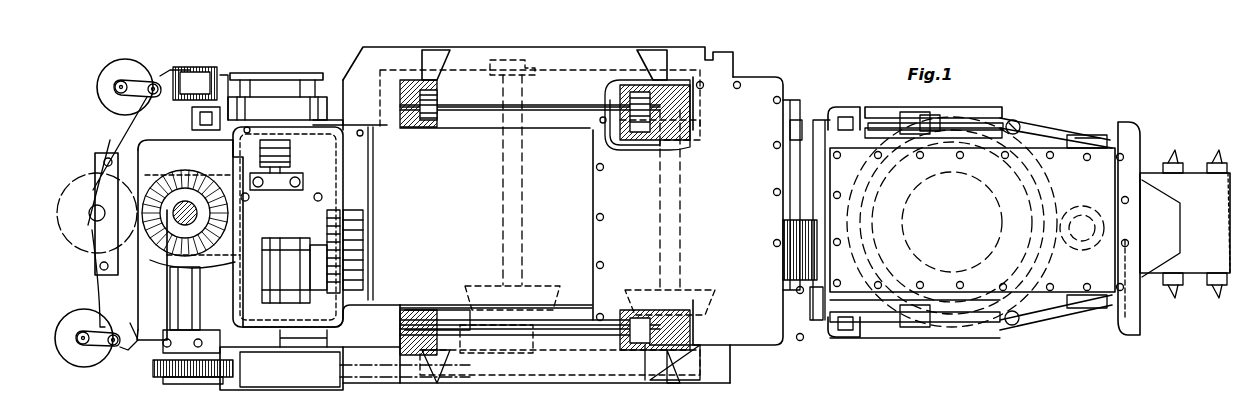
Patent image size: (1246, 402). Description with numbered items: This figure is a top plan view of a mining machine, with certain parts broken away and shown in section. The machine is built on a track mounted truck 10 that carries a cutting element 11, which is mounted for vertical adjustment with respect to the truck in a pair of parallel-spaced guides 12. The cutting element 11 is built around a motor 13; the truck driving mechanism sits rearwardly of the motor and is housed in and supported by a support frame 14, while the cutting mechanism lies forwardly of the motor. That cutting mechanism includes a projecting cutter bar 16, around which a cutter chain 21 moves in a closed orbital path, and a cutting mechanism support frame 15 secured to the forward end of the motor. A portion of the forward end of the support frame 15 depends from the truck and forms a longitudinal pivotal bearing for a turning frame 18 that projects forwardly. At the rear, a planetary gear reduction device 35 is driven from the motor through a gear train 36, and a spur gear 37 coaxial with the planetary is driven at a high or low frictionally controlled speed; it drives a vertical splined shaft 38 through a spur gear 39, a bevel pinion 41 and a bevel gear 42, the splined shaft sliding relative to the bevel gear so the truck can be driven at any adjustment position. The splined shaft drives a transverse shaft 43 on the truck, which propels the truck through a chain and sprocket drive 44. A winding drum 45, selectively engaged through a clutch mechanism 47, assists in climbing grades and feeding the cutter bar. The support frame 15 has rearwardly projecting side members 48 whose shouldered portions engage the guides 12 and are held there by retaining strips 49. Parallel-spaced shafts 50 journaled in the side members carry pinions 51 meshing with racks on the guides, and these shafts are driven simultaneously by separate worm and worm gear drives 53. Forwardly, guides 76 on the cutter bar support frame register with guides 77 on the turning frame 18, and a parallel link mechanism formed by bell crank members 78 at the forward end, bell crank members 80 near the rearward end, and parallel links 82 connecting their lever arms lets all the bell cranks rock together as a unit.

The track mounted truck 10 is at (740, 78).
The cutting element 11 is at (384, 118).
The guides 12 is at (418, 60).
The motor 13 is at (385, 312).
The support frame 14 is at (343, 120).
The cutting mechanism support frame 15 is at (752, 345).
The cutter bar 16 is at (1192, 285).
The turning frame 18 is at (1115, 130).
The cutter chain 21 is at (1190, 163).
The planetary gear reduction device 35 is at (298, 300).
The gear train 36 is at (365, 242).
The spur gear 37 is at (322, 290).
The vertical splined shaft 38 is at (170, 265).
The spur gear 39 is at (343, 190).
The bevel pinion 41 is at (200, 180).
The bevel gear 42 is at (108, 146).
The transverse shaft 43 is at (170, 330).
The chain and sprocket drive 44 is at (190, 377).
The winding drum 45 is at (232, 73).
The clutch mechanism 47 is at (290, 152).
The side members 48 is at (437, 130).
The retaining strips 49 is at (403, 80).
The shafts 50 is at (556, 112).
The pinions 51 is at (695, 120).
The worm and worm gear drives 53 is at (622, 150).
The guides 76 is at (832, 110).
The guides 77 is at (850, 118).
The bell crank members 78 is at (1075, 135).
The bell crank members 80 is at (905, 112).
The parallel links 82 is at (970, 300).